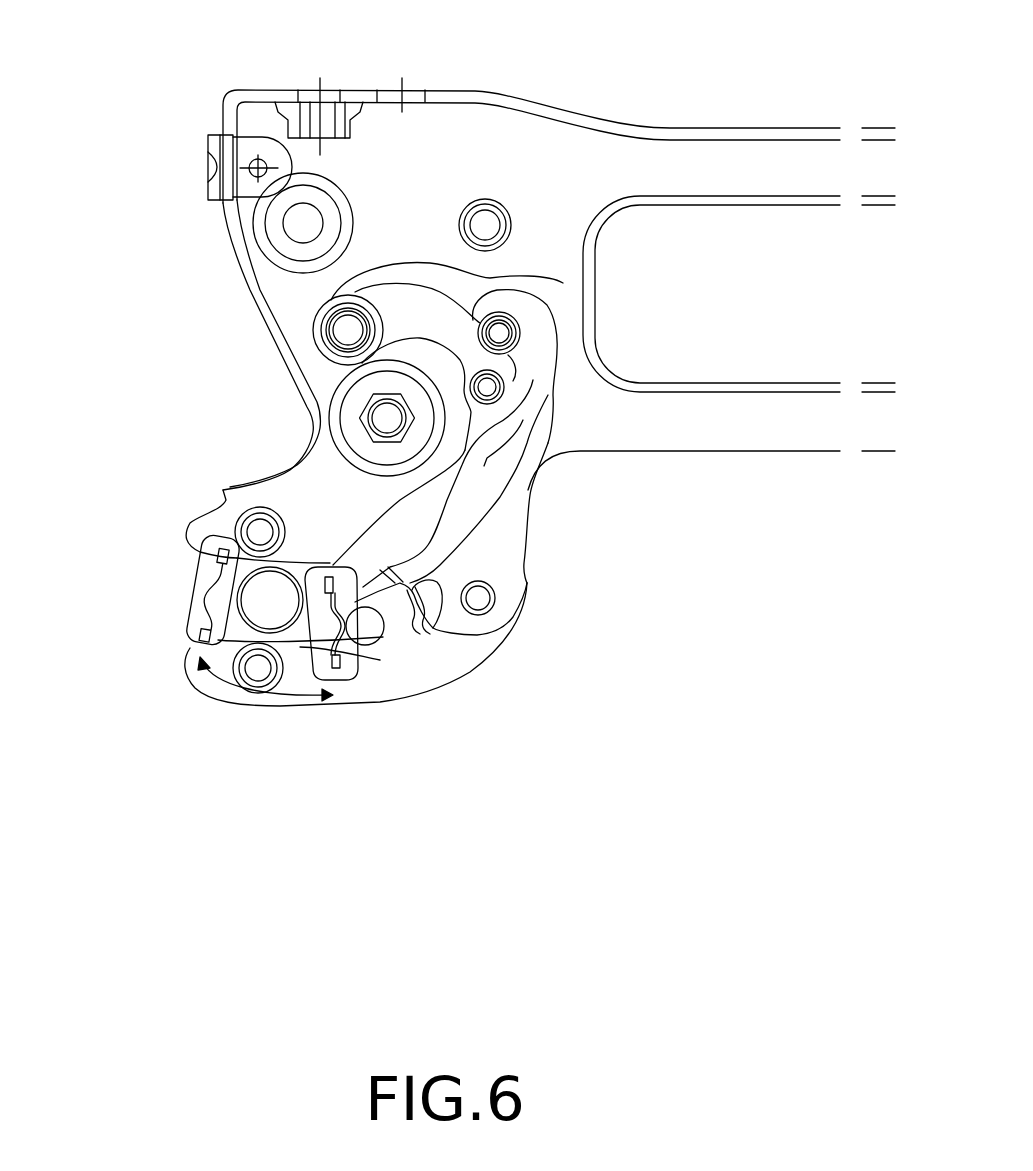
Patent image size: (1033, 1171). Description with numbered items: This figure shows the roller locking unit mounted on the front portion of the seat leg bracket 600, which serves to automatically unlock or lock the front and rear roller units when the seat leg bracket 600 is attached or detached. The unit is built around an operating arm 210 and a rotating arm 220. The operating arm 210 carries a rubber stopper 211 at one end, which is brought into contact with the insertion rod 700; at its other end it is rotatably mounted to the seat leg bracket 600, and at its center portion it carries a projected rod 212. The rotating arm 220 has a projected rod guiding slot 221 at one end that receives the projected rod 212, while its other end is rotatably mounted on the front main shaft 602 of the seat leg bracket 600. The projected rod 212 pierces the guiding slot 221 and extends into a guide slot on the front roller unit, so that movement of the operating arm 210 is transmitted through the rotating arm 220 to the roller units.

The seat leg bracket 600 is at (557, 105).
The front main shaft 602 is at (322, 420).
The operating arm 210 is at (422, 267).
The projected rod 212 is at (563, 283).
The projected rod guiding slot 221 is at (520, 380).
The rotating arm 220 is at (484, 466).
The rubber stopper 211 is at (340, 678).
The insertion rod 700 is at (268, 606).